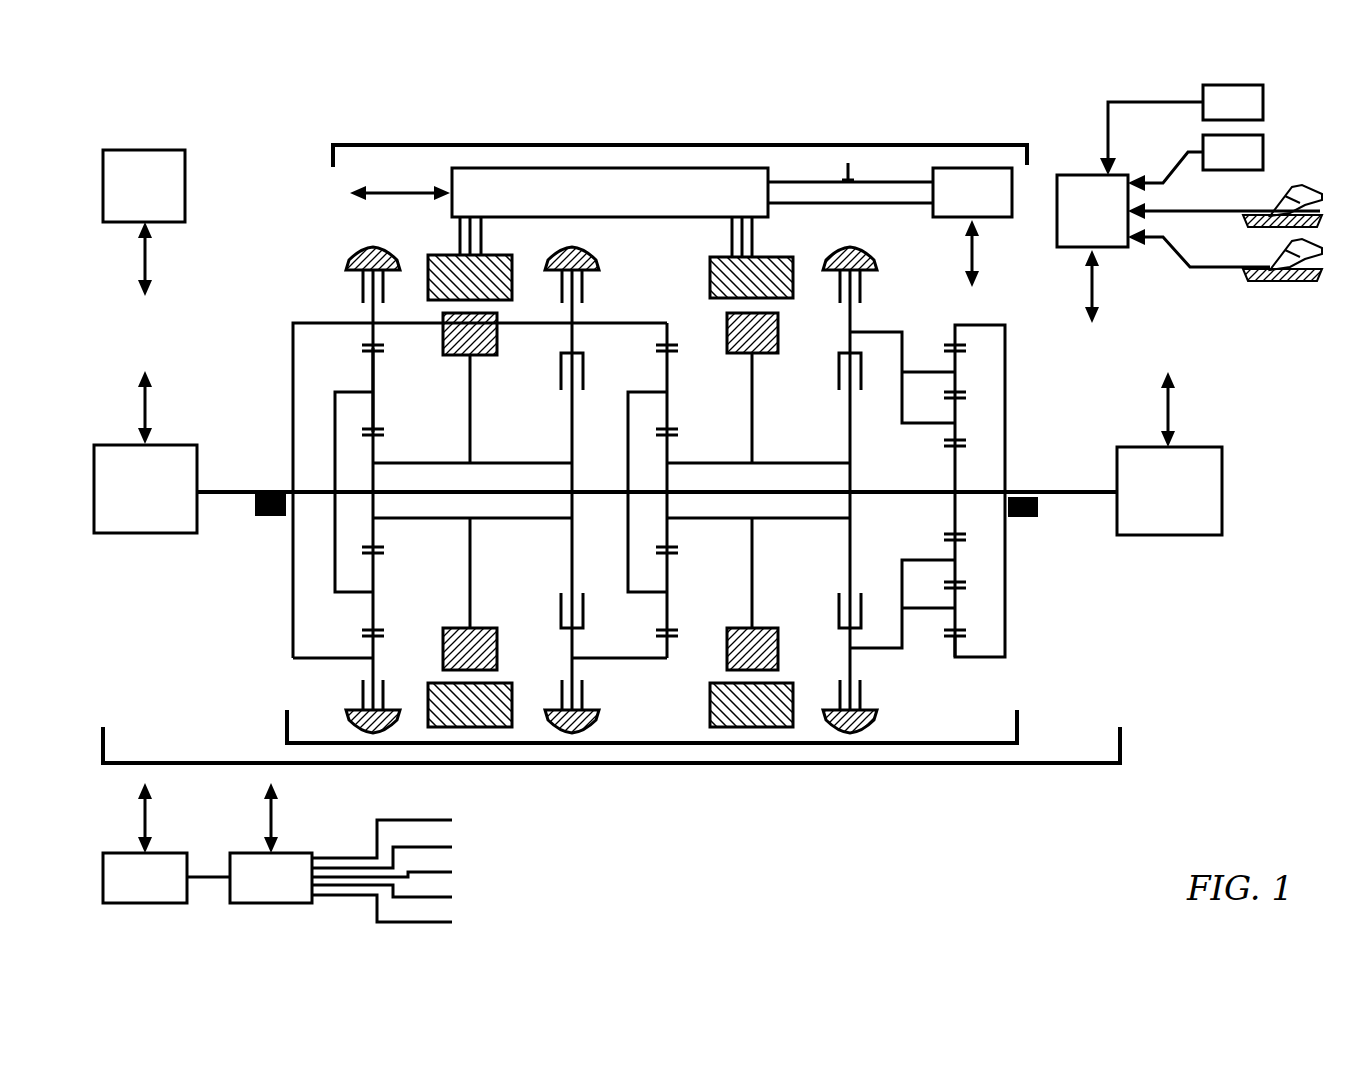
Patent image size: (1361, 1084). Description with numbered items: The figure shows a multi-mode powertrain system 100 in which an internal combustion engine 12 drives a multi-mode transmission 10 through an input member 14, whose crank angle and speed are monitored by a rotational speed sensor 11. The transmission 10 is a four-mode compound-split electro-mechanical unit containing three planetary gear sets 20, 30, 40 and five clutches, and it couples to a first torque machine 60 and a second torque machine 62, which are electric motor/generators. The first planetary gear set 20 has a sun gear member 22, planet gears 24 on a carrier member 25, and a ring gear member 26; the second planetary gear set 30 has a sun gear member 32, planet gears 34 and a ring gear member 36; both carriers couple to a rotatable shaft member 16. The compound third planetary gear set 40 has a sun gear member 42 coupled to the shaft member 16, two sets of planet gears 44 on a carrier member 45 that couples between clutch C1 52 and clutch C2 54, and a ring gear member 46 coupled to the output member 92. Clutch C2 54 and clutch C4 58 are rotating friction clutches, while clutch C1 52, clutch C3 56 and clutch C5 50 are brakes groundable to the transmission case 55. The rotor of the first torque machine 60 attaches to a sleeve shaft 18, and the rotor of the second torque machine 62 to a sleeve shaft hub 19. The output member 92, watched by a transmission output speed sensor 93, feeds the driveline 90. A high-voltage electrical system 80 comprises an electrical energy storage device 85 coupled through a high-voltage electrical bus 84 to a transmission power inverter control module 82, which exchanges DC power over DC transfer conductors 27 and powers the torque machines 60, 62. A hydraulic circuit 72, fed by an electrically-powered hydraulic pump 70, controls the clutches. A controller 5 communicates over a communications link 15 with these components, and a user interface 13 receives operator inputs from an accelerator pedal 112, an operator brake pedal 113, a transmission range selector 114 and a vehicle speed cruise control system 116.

The controller 5 is at (137, 194).
The multi-mode transmission 10 is at (786, 743).
The rotational speed sensor 11 is at (268, 517).
The internal combustion engine 12 is at (132, 501).
The user interface 13 is at (1079, 224).
The input member 14 is at (237, 495).
The communications link 15 is at (113, 267).
The rotatable shaft member 16 is at (580, 490).
The sleeve shaft 18 is at (515, 462).
The sleeve shaft hub 19 is at (805, 462).
The first planetary gear set 20 is at (383, 533).
The sun gear member 22 is at (382, 440).
The planet gears 24 is at (382, 390).
The carrier member 25 is at (337, 462).
The ring gear member 26 is at (380, 345).
The DC transfer conductors 27 is at (492, 245).
The second planetary gear set 30 is at (670, 592).
The sun gear member 32 is at (672, 443).
The planet gears 34 is at (672, 392).
The ring gear member 36 is at (668, 345).
The third planetary gear set 40 is at (941, 484).
The sun gear member 42 is at (957, 528).
The planet gears 44 is at (957, 560).
The carrier member 45 is at (917, 345).
The ring gear member 46 is at (955, 637).
The clutch C5 50 is at (362, 290).
The clutch C1 52 is at (865, 292).
The clutch C2 54 is at (838, 378).
The transmission case 55 is at (362, 252).
The clutch C3 56 is at (590, 278).
The clutch C4 58 is at (558, 378).
The first torque machine 60 is at (492, 302).
The second torque machine 62 is at (782, 302).
The electrically-powered hydraulic pump 70 is at (132, 889).
The hydraulic circuit 72 is at (258, 889).
The high-voltage electrical system 80 is at (695, 145).
The transmission power inverter control module 82 is at (597, 204).
The high-voltage electrical bus 84 is at (888, 182).
The electrical energy storage device 85 is at (959, 204).
The driveline 90 is at (1157, 501).
The output member 92 is at (1067, 490).
The transmission output speed sensor 93 is at (1040, 510).
The powertrain system 100 is at (687, 763).
The accelerator pedal 112 is at (1265, 266).
The operator brake pedal 113 is at (1265, 212).
The transmission range selector 114 is at (1214, 163).
The vehicle speed cruise control system 116 is at (1214, 114).